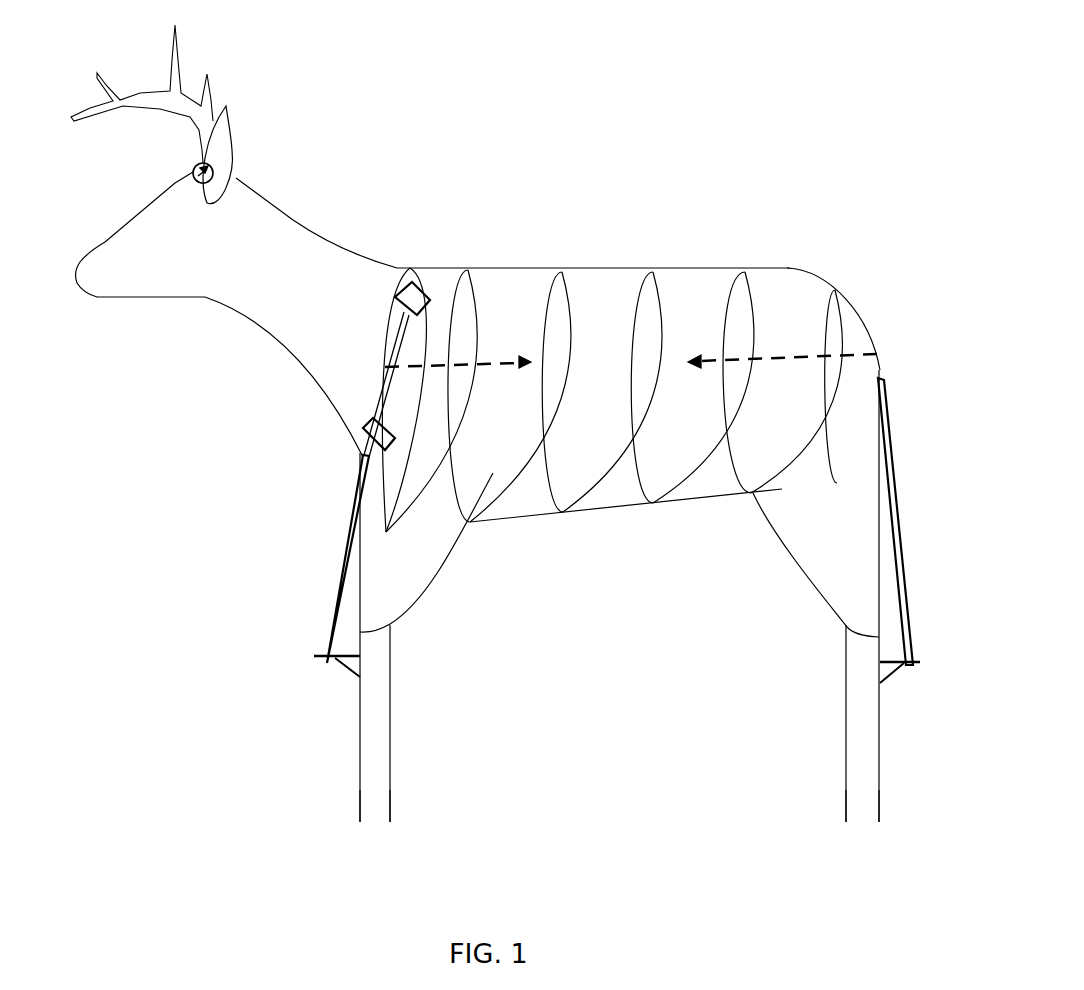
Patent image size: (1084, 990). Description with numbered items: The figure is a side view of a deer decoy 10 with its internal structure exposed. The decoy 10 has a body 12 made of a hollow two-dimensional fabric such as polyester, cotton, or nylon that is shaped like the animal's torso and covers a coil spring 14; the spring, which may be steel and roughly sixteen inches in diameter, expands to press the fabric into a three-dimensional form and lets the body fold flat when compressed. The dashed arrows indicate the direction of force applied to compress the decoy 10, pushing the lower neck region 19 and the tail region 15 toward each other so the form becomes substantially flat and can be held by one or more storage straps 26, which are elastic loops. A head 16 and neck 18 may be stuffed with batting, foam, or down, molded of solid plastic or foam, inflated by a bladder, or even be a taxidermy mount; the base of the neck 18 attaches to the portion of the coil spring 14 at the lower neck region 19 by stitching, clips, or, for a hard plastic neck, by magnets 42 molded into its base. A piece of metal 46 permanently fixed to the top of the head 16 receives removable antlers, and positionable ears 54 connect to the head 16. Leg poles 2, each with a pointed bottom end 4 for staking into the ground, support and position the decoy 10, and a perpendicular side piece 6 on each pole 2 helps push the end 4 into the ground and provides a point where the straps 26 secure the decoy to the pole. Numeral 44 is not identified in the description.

The deer decoy 10 is at (667, 88).
The body 12 is at (543, 268).
The coil spring 14 is at (735, 290).
The tail region 15 is at (855, 327).
The head 16 is at (239, 190).
The neck 18 is at (295, 318).
The lower neck region 19 is at (384, 366).
The storage straps 26 is at (340, 530).
The magnets 42 is at (420, 283).
The eye sensor 44 is at (213, 163).
The piece of metal 46 is at (193, 172).
The ears 54 is at (230, 140).
The perpendicular side piece 6 is at (326, 652).
The leg poles 2 is at (360, 733).
The pointed bottom end 4 is at (360, 813).